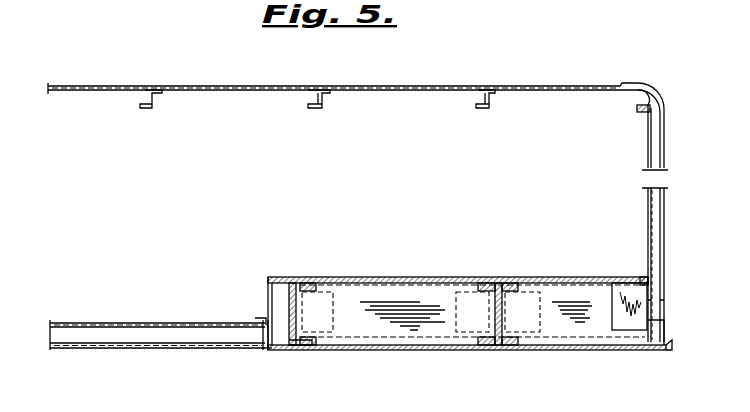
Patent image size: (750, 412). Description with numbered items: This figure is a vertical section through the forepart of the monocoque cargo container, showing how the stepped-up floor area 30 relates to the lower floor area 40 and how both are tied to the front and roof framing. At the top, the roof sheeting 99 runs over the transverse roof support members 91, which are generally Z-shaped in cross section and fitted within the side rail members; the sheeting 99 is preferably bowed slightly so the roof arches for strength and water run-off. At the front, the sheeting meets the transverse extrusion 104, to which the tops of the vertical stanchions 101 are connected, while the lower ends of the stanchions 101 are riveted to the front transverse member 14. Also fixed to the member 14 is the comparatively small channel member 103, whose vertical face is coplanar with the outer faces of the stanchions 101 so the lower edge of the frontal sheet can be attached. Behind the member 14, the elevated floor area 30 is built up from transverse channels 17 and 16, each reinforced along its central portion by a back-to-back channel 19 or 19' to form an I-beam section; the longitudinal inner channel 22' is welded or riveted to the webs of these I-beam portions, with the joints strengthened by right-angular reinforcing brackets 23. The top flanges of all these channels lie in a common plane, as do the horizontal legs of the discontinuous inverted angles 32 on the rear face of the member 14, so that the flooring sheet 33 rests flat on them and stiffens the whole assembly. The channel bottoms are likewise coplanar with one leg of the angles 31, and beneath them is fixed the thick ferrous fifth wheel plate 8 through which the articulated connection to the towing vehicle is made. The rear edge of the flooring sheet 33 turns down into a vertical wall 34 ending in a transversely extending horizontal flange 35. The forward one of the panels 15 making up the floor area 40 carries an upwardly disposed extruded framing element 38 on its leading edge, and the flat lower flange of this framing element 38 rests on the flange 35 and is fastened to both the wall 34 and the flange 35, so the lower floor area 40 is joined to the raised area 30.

The roof sheeting 99 is at (412, 85).
The transverse extrusion 104 is at (660, 100).
The stanchion 101 is at (650, 218).
The roof support member 91 is at (318, 108).
The floor area 30 is at (415, 272).
The flooring sheet 33 is at (582, 277).
The vertical wall 34 is at (268, 296).
The fifth wheel plate 8 is at (573, 350).
The transverse member 17 is at (283, 280).
The reinforcing channel 19 is at (313, 294).
The reinforcing channel 19' is at (482, 294).
The transverse member 16 is at (507, 283).
The reinforcing bracket 23 is at (327, 300).
The inner channel 22' is at (402, 310).
The angle 31 is at (599, 306).
The inverted angle 32 is at (648, 282).
The channel member 103 is at (656, 305).
The front transverse member 14 is at (663, 323).
The panel 15 is at (176, 348).
The floor area 40 is at (145, 316).
The framing element 38 is at (258, 320).
The horizontal flange 35 is at (259, 350).